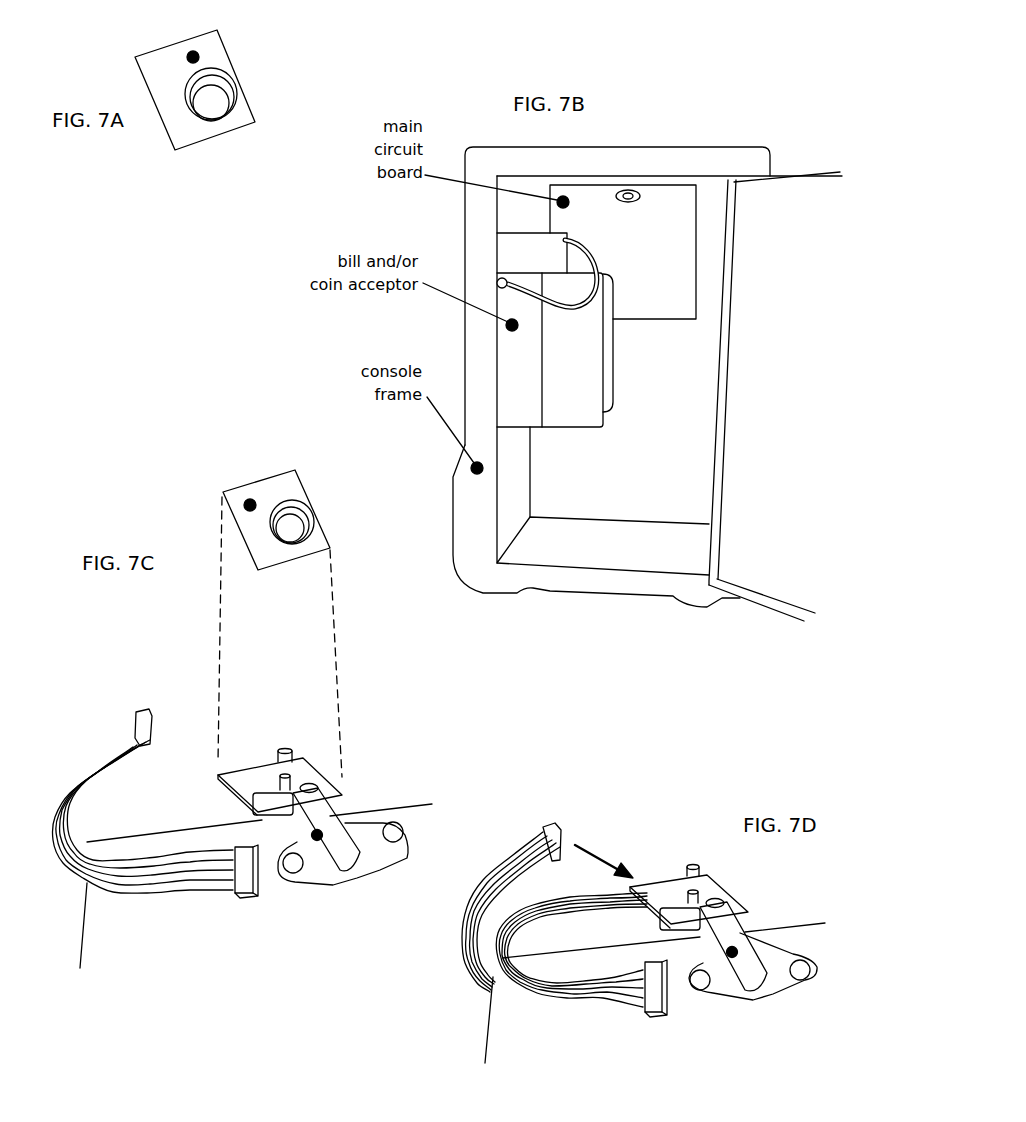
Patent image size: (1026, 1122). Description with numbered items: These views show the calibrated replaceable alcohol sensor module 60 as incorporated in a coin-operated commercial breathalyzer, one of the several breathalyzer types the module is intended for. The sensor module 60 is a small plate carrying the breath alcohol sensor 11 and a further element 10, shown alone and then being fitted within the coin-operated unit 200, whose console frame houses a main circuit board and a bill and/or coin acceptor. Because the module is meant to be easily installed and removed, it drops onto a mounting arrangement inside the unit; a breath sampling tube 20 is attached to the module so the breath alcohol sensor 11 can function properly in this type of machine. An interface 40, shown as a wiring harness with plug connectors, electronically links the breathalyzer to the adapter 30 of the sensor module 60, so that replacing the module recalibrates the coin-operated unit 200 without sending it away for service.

In FIG. 7A, the push button 10 is at (199, 56).
In FIG. 7C, the push button 10 is at (247, 500).
In FIG. 7A, the breath alcohol sensor 11 is at (211, 103).
In FIG. 7C, the breath alcohol sensor 11 is at (292, 532).
In FIG. 7A, the calibrated replaceable alcohol sensor module 60 is at (192, 150).
In FIG. 7C, the calibrated replaceable alcohol sensor module 60 is at (277, 570).
In FIG. 7B, the breath sampling tube 20 is at (631, 190).
In FIG. 7C, the breath sampling tube 20 is at (317, 840).
In FIG. 7D, the breath sampling tube 20 is at (732, 958).
In FIG. 7D, the adapter 30 is at (652, 882).
In FIG. 7C, the interface 40 is at (103, 740).
In FIG. 7D, the interface 40 is at (527, 903).
In FIG. 7B, the gaming console frame 200 is at (723, 142).